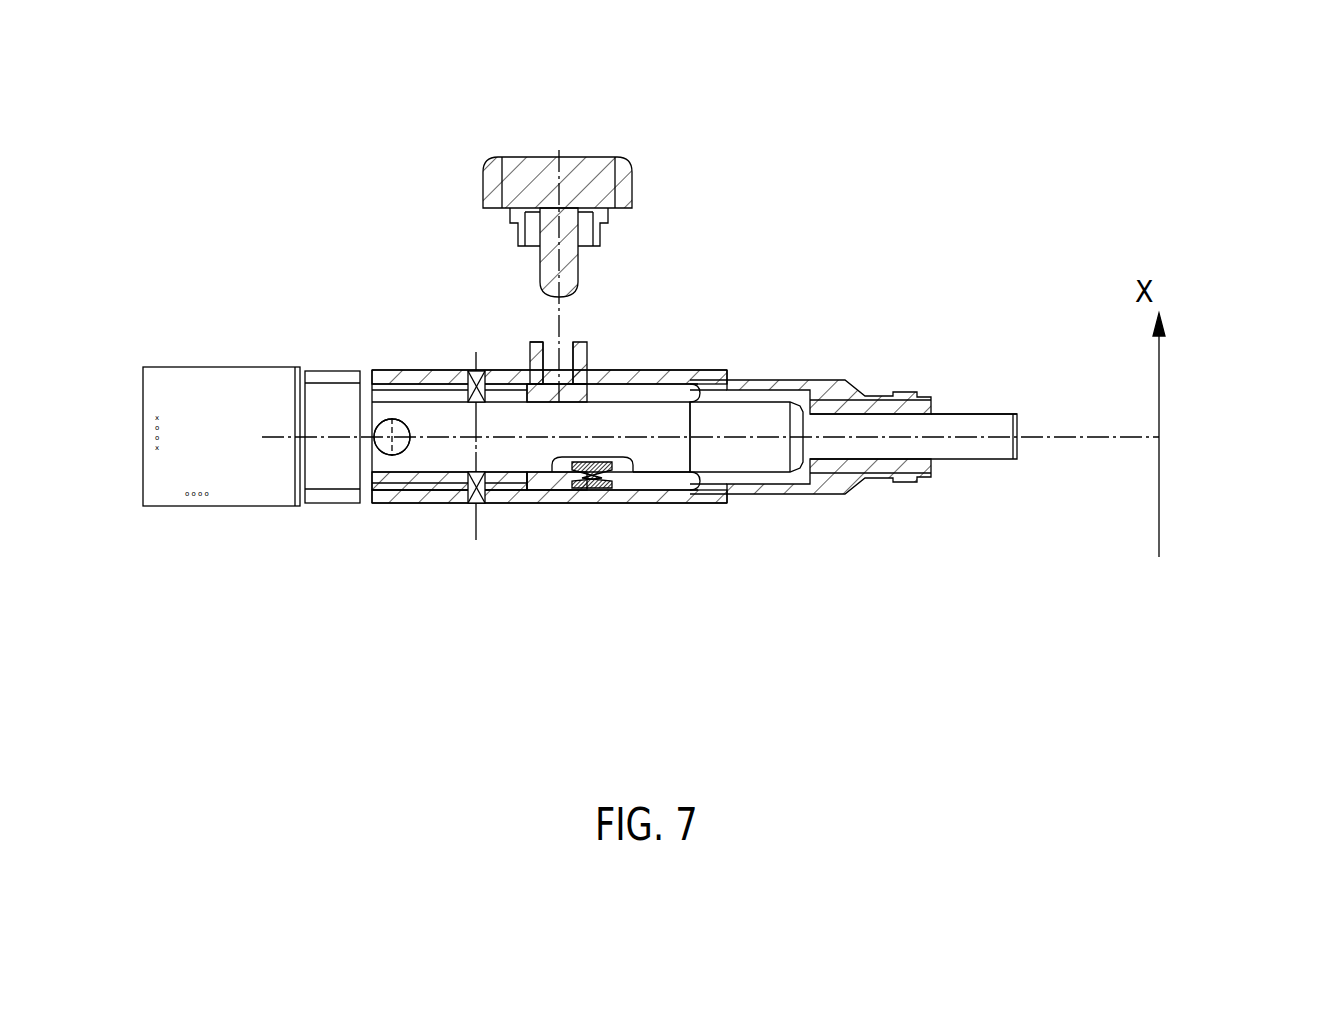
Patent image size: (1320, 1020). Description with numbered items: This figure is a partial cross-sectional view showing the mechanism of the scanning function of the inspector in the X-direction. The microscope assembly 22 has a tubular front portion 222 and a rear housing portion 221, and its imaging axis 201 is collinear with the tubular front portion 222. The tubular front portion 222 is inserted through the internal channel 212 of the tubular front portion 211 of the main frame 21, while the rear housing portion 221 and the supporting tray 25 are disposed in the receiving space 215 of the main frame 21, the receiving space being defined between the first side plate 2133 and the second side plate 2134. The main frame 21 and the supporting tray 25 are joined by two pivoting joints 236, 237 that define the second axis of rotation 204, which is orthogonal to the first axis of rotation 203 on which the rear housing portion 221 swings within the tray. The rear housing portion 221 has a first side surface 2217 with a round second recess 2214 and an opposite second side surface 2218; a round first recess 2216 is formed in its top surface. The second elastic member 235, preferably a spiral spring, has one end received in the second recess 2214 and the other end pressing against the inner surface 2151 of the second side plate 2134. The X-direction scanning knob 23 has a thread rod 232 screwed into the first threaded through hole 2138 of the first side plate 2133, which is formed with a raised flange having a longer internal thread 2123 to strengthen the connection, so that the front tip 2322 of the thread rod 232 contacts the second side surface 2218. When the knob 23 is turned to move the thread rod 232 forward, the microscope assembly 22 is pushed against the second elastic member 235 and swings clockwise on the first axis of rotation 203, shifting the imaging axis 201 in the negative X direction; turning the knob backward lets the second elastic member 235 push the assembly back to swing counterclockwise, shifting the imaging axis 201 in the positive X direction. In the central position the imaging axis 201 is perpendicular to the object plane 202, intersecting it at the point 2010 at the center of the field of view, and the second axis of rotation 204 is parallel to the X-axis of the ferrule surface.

The front tip 2322 is at (557, 300).
The X-direction scanning knob 23 is at (608, 157).
The second side surface 2218 is at (522, 378).
The thread rod 232 is at (580, 263).
The first threaded through hole 2138 is at (562, 356).
The first side plate 2133 is at (430, 372).
The supporting tray 25 is at (403, 372).
The pivoting joint 237 is at (470, 372).
The receiving space 215 is at (723, 370).
The internal channel 212 is at (858, 405).
The first recess 2216 is at (374, 437).
The internal thread 2123 is at (587, 365).
The main frame 21 is at (733, 368).
The imaging axis 201 is at (997, 432).
The point 2010 is at (1160, 437).
The axis 203 is at (392, 437).
The pivoting joint 236 is at (470, 503).
The second axis of rotation 204 is at (472, 530).
The second side plate 2134 is at (475, 503).
The inner surface 2151 is at (530, 495).
The second elastic member 235 is at (580, 490).
The second recess 2214 is at (618, 485).
The first side surface 2217 is at (645, 453).
The rear housing portion 221 is at (687, 473).
The microscope assembly 22 is at (780, 453).
The tubular front portion 211 is at (885, 478).
The tubular front portion 222 is at (933, 447).
The object plane 202 is at (1160, 489).